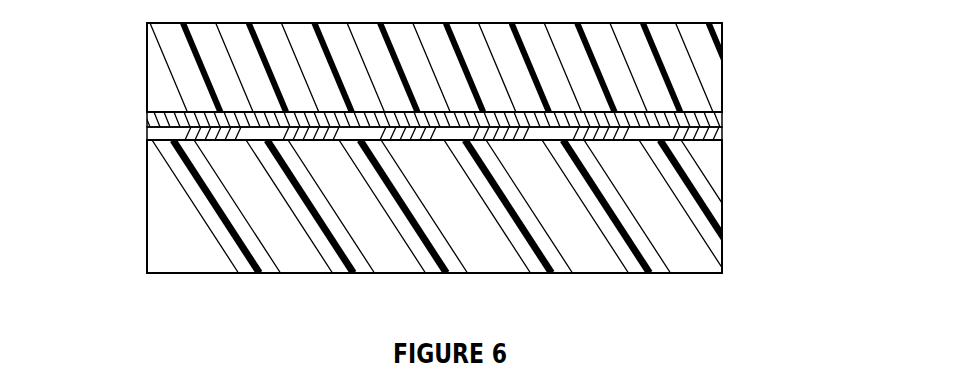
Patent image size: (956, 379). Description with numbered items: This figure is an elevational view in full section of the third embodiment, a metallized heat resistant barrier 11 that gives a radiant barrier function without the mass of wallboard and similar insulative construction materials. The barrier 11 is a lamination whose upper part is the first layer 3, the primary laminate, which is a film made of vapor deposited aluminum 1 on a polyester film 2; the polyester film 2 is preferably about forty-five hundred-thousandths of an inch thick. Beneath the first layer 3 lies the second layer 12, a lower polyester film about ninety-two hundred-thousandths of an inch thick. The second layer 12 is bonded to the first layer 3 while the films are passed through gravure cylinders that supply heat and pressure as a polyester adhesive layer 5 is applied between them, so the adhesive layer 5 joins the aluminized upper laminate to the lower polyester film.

The metallized heat resistant barrier 11 is at (90, 24).
The first layer 3 is at (133, 27).
The polyester film 2 is at (723, 68).
The vapor deposited aluminum 1 is at (723, 123).
The polyester adhesive layer 5 is at (723, 137).
The second layer 12 is at (723, 203).